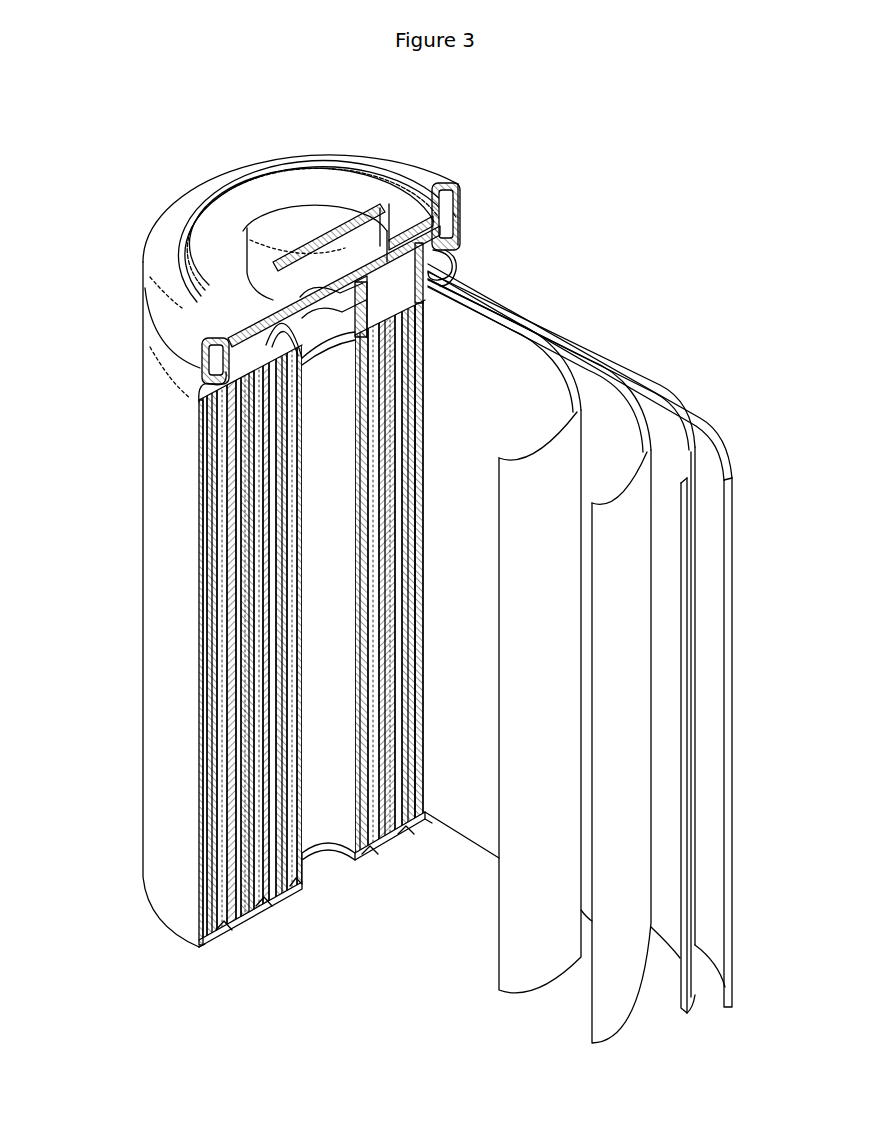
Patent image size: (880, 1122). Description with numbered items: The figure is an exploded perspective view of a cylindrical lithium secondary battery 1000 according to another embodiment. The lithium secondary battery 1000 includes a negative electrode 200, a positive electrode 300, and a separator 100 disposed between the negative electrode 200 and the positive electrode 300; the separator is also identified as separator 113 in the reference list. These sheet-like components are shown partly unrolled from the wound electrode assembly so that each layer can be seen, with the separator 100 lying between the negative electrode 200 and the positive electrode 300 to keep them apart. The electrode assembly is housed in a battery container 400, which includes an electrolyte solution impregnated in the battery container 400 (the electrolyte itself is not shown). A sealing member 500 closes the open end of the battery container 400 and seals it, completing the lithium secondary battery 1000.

The lithium secondary battery 1000 is at (530, 156).
The sealing member 500 is at (290, 212).
The battery container 400 is at (162, 616).
The separator 113 is at (535, 345).
The positive electrode 300 is at (607, 400).
The separator 100 is at (673, 420).
The negative electrode 200 is at (722, 448).